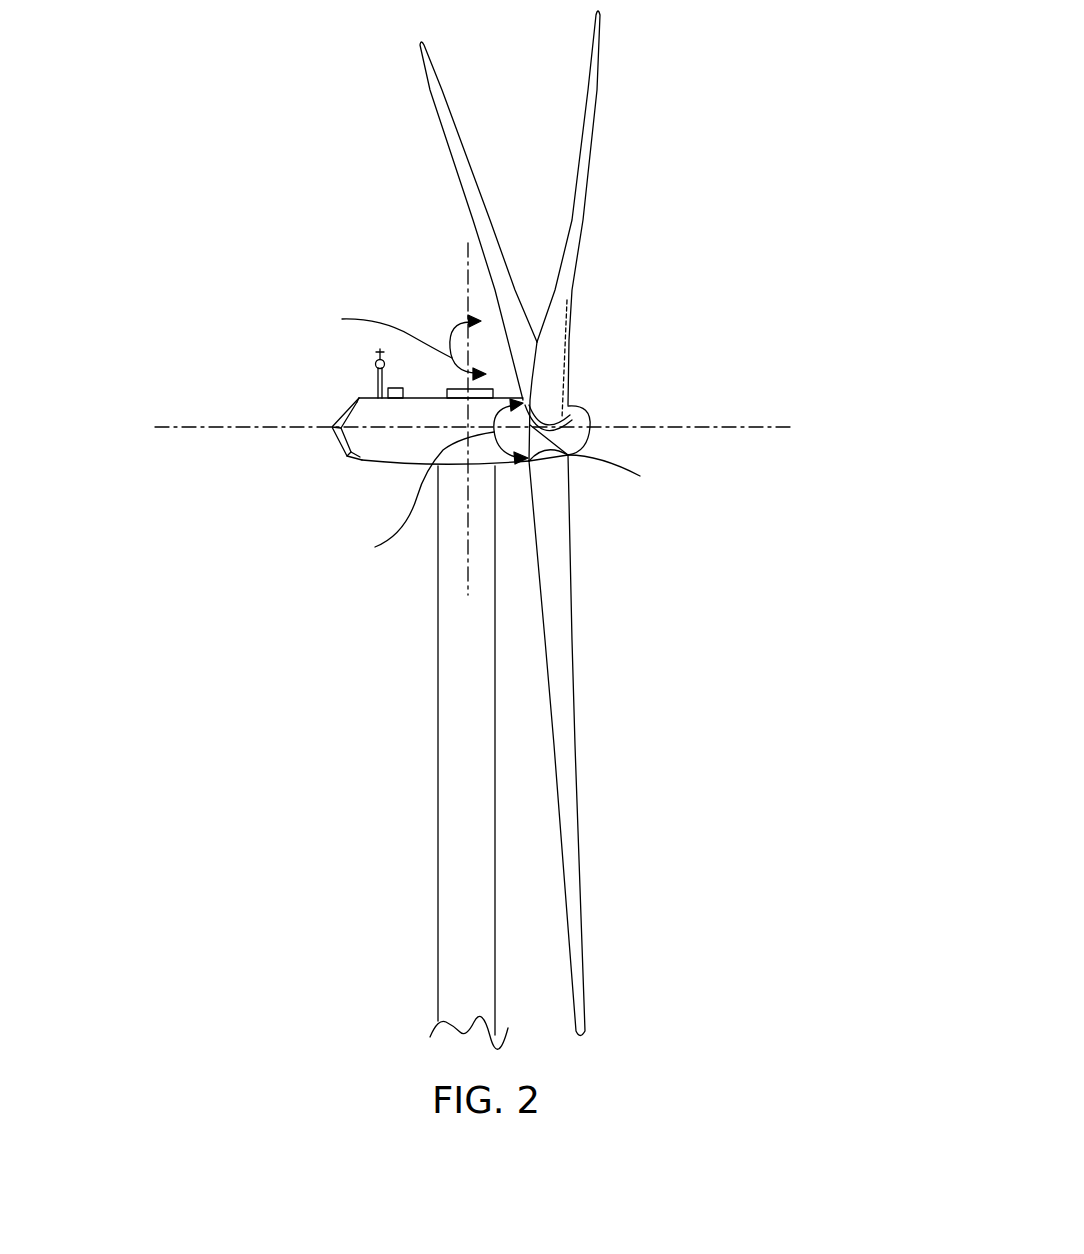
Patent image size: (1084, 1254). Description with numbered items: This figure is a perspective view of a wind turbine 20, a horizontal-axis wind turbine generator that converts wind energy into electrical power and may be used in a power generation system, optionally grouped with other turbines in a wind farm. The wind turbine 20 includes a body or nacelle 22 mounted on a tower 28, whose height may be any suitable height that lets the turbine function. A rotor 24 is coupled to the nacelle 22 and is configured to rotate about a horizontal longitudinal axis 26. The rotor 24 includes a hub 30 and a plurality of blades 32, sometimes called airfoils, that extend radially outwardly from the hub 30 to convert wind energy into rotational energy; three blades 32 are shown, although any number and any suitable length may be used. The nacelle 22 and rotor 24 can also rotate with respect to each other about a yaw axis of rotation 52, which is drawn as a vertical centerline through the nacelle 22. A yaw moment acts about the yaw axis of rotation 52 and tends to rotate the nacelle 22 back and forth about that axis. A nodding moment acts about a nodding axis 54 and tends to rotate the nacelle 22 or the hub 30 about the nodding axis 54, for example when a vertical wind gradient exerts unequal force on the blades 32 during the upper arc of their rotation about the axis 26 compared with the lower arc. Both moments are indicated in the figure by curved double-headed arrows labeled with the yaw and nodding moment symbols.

The wind turbine 20 is at (303, 167).
The nacelle 22 is at (381, 465).
The rotor 24 is at (626, 534).
The horizontal longitudinal axis 26 is at (758, 425).
The tower 28 is at (437, 815).
The hub 30 is at (588, 406).
The blades 32 is at (455, 98).
The yaw axis of rotation 52 is at (467, 274).
The nodding axis 54 is at (620, 478).